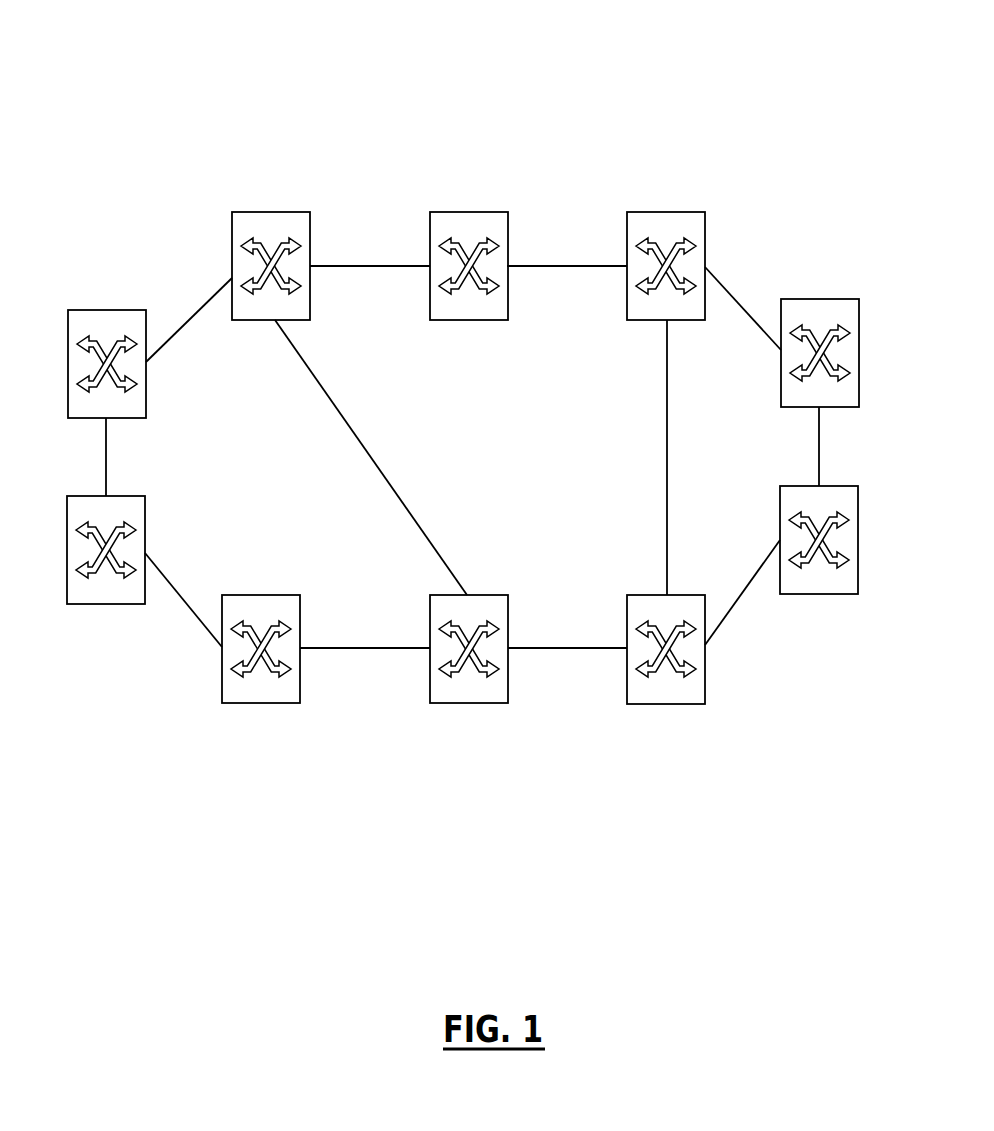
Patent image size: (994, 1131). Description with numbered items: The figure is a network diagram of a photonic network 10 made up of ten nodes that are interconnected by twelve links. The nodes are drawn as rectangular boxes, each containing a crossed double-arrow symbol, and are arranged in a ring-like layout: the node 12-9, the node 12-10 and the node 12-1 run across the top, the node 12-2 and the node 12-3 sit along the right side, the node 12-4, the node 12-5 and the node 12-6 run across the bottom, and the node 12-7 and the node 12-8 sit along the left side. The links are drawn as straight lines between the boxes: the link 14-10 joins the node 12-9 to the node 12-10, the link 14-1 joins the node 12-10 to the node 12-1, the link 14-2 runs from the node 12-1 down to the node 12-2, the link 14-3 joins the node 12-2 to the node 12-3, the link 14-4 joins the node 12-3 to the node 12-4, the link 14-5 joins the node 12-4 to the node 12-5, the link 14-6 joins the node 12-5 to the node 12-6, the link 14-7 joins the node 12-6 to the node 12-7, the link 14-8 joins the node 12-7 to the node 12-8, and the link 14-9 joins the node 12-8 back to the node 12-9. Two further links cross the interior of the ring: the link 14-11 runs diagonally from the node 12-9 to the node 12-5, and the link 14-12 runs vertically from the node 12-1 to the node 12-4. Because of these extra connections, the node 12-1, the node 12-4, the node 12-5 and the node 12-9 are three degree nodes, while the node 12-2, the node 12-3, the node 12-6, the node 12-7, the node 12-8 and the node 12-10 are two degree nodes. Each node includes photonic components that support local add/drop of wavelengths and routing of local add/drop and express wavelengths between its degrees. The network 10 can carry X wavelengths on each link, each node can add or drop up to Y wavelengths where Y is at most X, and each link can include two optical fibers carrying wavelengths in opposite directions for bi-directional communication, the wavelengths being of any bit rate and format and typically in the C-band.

The photonic network 10 is at (517, 80).
The node 12-1 is at (676, 212).
The node 12-2 is at (823, 299).
The node 12-3 is at (835, 486).
The node 12-4 is at (668, 705).
The node 12-5 is at (470, 704).
The node 12-6 is at (263, 704).
The node 12-7 is at (122, 496).
The node 12-8 is at (110, 310).
The node 12-9 is at (275, 212).
The node 12-10 is at (472, 212).
The link 14-1 is at (533, 266).
The link 14-2 is at (733, 298).
The link 14-3 is at (818, 422).
The link 14-4 is at (737, 605).
The link 14-5 is at (533, 648).
The link 14-6 is at (332, 648).
The link 14-7 is at (174, 586).
The link 14-8 is at (105, 430).
The link 14-9 is at (173, 336).
The link 14-10 is at (330, 266).
The link 14-11 is at (388, 480).
The link 14-12 is at (667, 427).